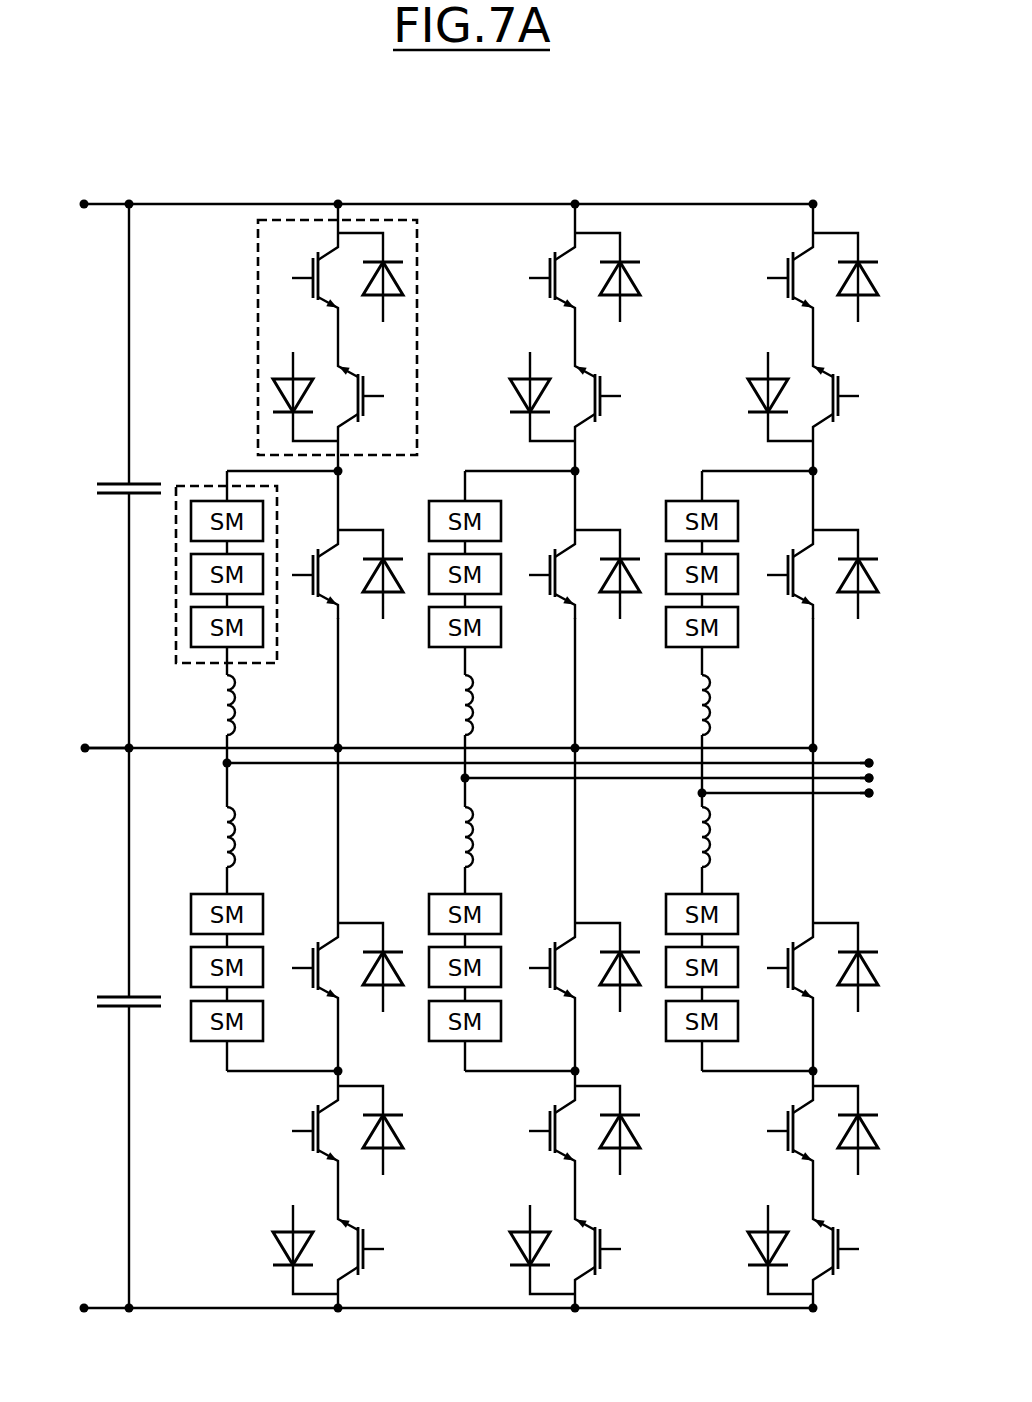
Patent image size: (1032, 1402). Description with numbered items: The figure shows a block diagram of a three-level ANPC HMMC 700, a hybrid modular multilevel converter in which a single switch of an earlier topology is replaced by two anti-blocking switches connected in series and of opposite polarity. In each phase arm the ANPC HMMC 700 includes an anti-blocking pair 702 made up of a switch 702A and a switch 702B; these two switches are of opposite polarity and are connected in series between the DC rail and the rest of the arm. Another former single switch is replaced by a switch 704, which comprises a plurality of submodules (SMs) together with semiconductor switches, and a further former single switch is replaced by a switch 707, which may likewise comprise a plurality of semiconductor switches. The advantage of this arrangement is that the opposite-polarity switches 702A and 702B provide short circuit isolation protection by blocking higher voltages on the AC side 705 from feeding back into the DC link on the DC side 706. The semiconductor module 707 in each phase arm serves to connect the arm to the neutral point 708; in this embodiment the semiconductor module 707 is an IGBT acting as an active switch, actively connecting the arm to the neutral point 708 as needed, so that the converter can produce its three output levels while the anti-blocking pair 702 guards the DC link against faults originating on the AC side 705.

The 3-level ANPC HMMC 700 is at (473, 161).
The anti-blocking pair 702 is at (258, 338).
The switch 702A is at (267, 262).
The switch 702B is at (268, 398).
The switch 704 is at (188, 665).
The AC side 705 is at (887, 762).
The DC side 706 is at (62, 705).
The semiconductor module 707 is at (372, 622).
The neutral point 708 is at (83, 750).